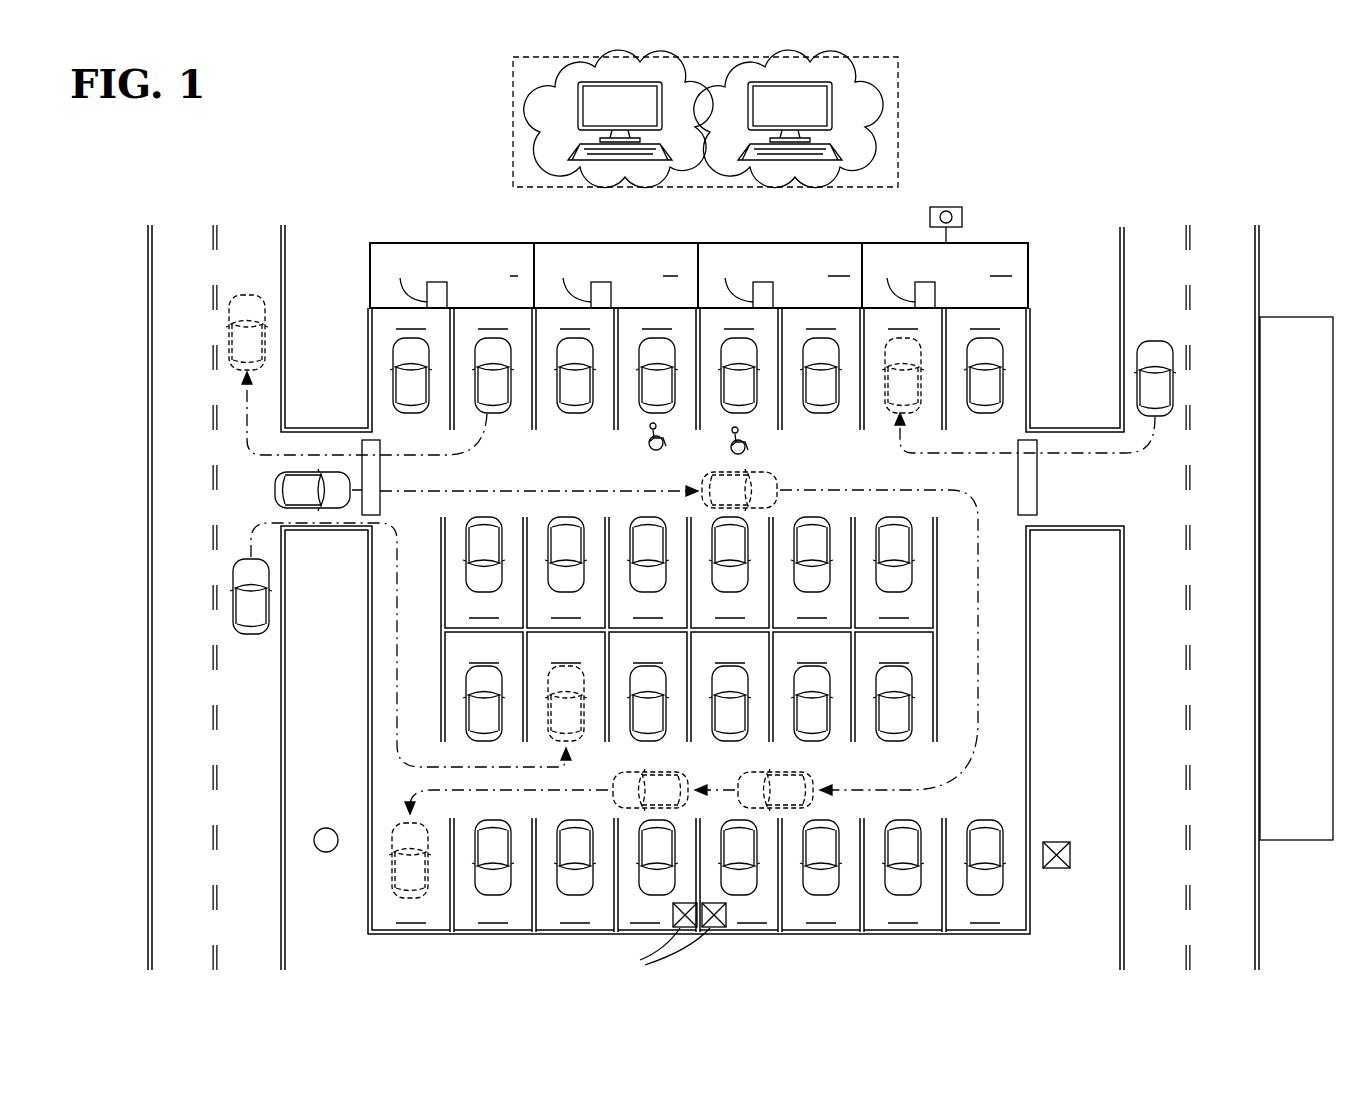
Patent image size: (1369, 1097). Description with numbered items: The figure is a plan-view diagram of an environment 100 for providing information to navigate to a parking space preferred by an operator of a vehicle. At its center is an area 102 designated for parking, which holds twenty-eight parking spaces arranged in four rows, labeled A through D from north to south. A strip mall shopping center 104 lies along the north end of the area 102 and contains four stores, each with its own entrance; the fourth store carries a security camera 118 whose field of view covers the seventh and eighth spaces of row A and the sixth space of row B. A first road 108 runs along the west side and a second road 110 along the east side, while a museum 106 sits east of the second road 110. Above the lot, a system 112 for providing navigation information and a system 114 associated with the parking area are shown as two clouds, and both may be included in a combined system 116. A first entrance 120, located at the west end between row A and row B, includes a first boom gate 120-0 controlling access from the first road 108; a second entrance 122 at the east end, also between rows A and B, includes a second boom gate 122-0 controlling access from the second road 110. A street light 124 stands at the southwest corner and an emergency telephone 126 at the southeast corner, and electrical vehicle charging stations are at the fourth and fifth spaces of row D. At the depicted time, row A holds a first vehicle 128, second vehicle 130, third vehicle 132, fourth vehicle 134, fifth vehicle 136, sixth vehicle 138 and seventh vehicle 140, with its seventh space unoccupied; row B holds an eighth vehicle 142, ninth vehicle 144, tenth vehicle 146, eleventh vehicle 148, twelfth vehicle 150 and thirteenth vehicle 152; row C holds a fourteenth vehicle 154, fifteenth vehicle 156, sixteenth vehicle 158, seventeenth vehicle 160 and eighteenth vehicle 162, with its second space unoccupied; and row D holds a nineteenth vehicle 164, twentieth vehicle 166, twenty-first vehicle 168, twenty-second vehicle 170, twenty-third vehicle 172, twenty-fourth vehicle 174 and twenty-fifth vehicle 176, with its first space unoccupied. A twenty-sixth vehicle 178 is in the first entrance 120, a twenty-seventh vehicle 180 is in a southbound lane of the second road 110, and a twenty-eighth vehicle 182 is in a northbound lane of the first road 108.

The environment 100 is at (1171, 90).
The area designated for parking 102 is at (702, 602).
The strip mall shopping center 104 is at (728, 265).
The museum 106 is at (1296, 547).
The first road 108 is at (183, 571).
The second road 110 is at (1224, 571).
The system for providing information to navigate to a parking space 112 is at (584, 119).
The system associated with the area designated for parking 114 is at (827, 119).
The combined system 116 is at (747, 122).
The security camera 118 is at (963, 201).
The first entrance 120 is at (326, 551).
The first boom gate 120-0 is at (342, 454).
The second entrance 122 is at (1075, 544).
The second boom gate 122-0 is at (1060, 447).
The street light 124 is at (334, 813).
The emergency telephone 126 is at (1067, 900).
The first vehicle 128 is at (411, 375).
The second vehicle 130 is at (376, 353).
The third vehicle 132 is at (575, 375).
The fourth vehicle 134 is at (657, 375).
The fifth vehicle 136 is at (739, 375).
The sixth vehicle 138 is at (821, 375).
The seventh vehicle 140 is at (985, 375).
The eighth vehicle 142 is at (484, 554).
The ninth vehicle 144 is at (566, 554).
The tenth vehicle 146 is at (648, 554).
The eleventh vehicle 148 is at (730, 554).
The twelfth vehicle 150 is at (812, 554).
The thirteenth vehicle 152 is at (894, 554).
The fourteenth vehicle 154 is at (484, 703).
The fifteenth vehicle 156 is at (648, 703).
The sixteenth vehicle 158 is at (730, 703).
The seventeenth vehicle 160 is at (812, 703).
The eighteenth vehicle 162 is at (894, 703).
The nineteenth vehicle 164 is at (493, 857).
The twentieth vehicle 166 is at (575, 857).
The twenty-first vehicle 168 is at (657, 857).
The twenty-second vehicle 170 is at (739, 857).
The twenty-third vehicle 172 is at (821, 857).
The twenty-fourth vehicle 174 is at (903, 857).
The twenty-fifth vehicle 176 is at (985, 857).
The twenty-sixth vehicle 178 is at (603, 678).
The twenty-seventh vehicle 180 is at (1019, 377).
The twenty-eighth vehicle 182 is at (433, 647).